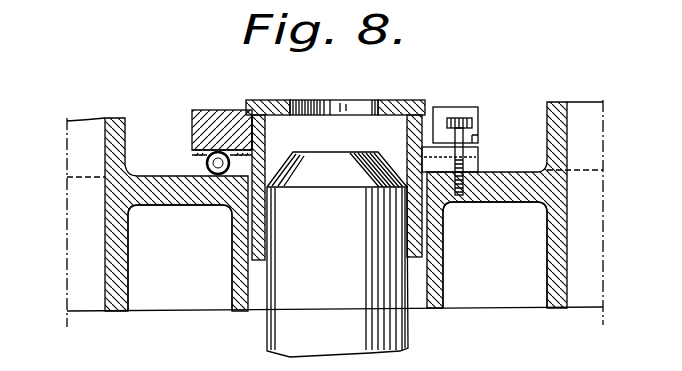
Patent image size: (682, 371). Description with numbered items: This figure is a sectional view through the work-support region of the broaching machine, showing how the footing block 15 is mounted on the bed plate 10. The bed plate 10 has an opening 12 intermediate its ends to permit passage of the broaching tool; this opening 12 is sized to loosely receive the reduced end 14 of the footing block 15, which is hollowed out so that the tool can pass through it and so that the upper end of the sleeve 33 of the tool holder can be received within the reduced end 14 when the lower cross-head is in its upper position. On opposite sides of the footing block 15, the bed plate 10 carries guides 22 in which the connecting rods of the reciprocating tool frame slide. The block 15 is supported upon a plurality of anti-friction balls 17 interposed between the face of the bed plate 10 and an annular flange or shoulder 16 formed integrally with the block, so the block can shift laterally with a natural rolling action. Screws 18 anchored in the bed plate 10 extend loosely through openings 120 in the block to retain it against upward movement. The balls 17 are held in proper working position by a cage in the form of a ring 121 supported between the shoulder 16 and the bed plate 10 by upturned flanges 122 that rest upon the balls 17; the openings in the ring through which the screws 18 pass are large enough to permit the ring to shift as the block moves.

The bed plate 10 is at (137, 176).
The opening 12 is at (259, 308).
The reduced end 14 is at (418, 241).
The footing block 15 is at (465, 108).
The annular flange 16 is at (192, 127).
The anti-friction balls 17 is at (206, 166).
The screws 18 is at (478, 151).
The guides 22 is at (115, 114).
The sleeve 33 is at (337, 254).
The openings 120 is at (478, 140).
The ring 121 is at (196, 152).
The upturned flanges 122 is at (233, 152).